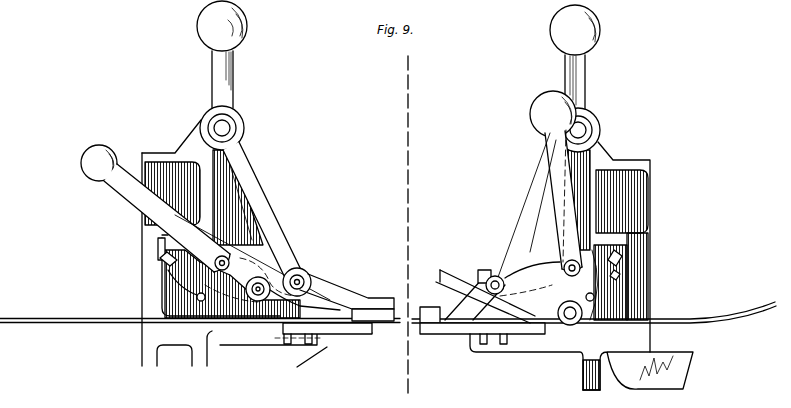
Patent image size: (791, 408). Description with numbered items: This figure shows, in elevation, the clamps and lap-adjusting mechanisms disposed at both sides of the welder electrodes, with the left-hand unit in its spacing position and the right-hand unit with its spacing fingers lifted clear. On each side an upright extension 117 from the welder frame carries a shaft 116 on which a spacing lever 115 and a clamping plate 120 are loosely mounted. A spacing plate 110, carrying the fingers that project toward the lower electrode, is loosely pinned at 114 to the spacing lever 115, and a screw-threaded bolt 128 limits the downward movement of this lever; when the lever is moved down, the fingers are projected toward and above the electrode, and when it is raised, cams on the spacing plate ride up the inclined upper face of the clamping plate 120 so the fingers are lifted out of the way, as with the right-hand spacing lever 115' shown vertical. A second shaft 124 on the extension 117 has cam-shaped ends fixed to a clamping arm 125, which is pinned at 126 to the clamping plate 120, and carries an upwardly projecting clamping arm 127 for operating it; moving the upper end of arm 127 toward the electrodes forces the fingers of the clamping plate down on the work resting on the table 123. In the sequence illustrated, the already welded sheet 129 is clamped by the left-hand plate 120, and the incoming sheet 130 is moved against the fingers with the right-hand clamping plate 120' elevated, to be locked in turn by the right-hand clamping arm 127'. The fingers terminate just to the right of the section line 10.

The section line 10 is at (420, 78).
The plate 110 is at (333, 318).
The pin 114 is at (292, 267).
The spacing lever 115 is at (155, 208).
The spacing lever 115' is at (538, 185).
The shaft or pin 116 is at (263, 224).
The upright extension 117 is at (152, 156).
The clamping plate 120 is at (260, 263).
The clamping plate 120' is at (529, 278).
The table 123 is at (362, 333).
The shaft 124 is at (230, 128).
The clamping arm 125 is at (254, 196).
The pin 126 is at (313, 284).
The clamping arm 127 is at (235, 54).
The clamping arm 127' is at (561, 58).
The screw-threaded bolt 128 is at (158, 271).
The metal sheet 129 is at (168, 325).
The metal sheet 130 is at (733, 318).